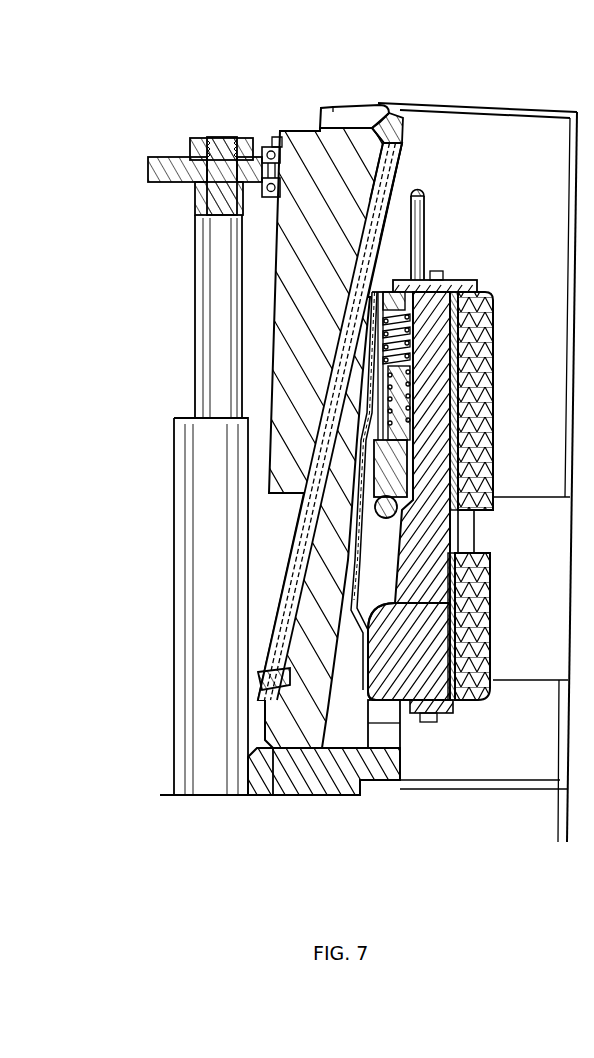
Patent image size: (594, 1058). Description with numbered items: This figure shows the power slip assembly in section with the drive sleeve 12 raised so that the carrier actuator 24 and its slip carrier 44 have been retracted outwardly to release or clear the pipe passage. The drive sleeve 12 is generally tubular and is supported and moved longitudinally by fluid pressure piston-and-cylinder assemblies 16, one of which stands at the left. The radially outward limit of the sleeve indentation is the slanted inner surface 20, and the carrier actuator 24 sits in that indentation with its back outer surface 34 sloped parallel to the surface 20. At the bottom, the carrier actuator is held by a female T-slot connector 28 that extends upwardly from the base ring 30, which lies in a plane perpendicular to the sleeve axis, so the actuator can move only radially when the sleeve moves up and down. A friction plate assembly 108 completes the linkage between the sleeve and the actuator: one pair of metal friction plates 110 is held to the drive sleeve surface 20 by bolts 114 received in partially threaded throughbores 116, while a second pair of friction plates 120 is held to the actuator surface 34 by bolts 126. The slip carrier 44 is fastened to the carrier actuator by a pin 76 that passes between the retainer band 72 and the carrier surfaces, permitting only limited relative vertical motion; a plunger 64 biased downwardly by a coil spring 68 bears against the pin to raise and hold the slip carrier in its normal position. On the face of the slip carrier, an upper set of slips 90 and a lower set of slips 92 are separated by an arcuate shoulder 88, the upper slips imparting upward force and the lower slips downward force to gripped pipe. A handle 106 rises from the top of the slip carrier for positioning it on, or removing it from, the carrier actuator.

The drive sleeve 12 is at (516, 130).
The fluid pressure piston-and-cylinder assembly 16 is at (181, 484).
The slanted inner surface 20 is at (392, 196).
The carrier actuator 24 is at (287, 648).
The female T-slot connector 28 is at (400, 736).
The base ring 30 is at (317, 797).
The outer surface 34 is at (300, 547).
The slip carrier 44 is at (441, 298).
The plunger 64 is at (407, 455).
The coil spring 68 is at (434, 334).
The retainer band 72 is at (380, 606).
The pin 76 is at (394, 506).
The arcuate transversely-extending shoulder 88 is at (467, 539).
The slips 90 is at (490, 388).
The slips 92 is at (490, 592).
The handle 106 is at (427, 216).
The friction plate assembly 108 is at (408, 104).
The friction plates 110 is at (392, 170).
The bolts 114 is at (373, 122).
The throughbores 116 is at (321, 109).
The friction plates 120 is at (292, 583).
The bolts 126 is at (258, 678).